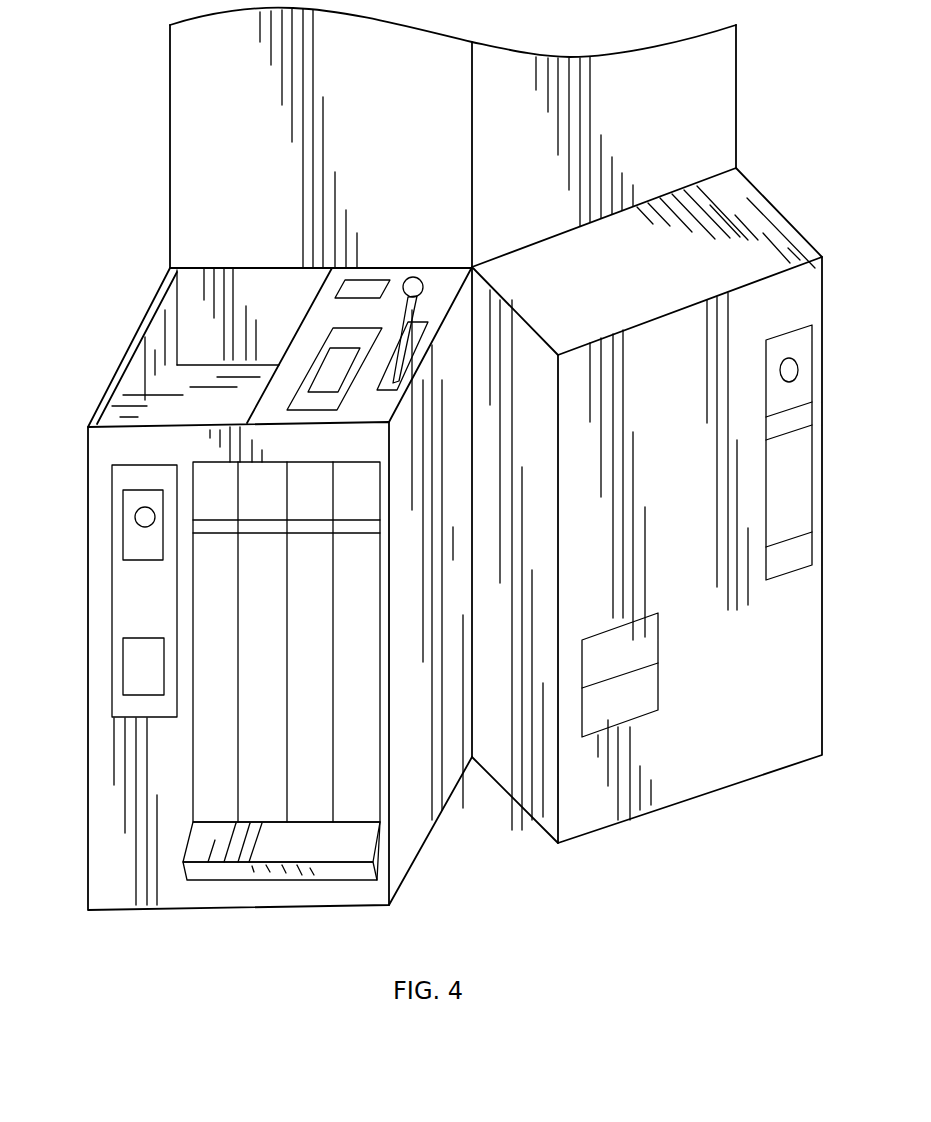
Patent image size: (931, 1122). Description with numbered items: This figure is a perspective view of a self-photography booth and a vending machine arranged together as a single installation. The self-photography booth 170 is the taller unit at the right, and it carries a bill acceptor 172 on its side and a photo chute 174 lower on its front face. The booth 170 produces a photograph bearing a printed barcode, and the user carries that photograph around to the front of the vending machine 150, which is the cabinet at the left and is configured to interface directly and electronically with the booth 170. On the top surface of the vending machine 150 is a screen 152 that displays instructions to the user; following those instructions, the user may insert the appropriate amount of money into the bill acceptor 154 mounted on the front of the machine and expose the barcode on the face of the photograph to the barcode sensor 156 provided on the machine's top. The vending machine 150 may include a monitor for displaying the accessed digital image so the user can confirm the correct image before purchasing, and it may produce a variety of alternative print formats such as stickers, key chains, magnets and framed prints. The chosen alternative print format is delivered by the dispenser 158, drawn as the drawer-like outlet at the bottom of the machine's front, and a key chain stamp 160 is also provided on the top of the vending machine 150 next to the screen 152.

The vending machine 150 is at (170, 156).
The screen 152 is at (143, 400).
The bill acceptor 154 is at (121, 603).
The barcode sensor 156 is at (347, 284).
The dispenser 158 is at (262, 850).
The key chain stamp 160 is at (328, 363).
The self-photography booth 170 is at (738, 117).
The bill acceptor 172 is at (797, 475).
The photo chute 174 is at (657, 706).